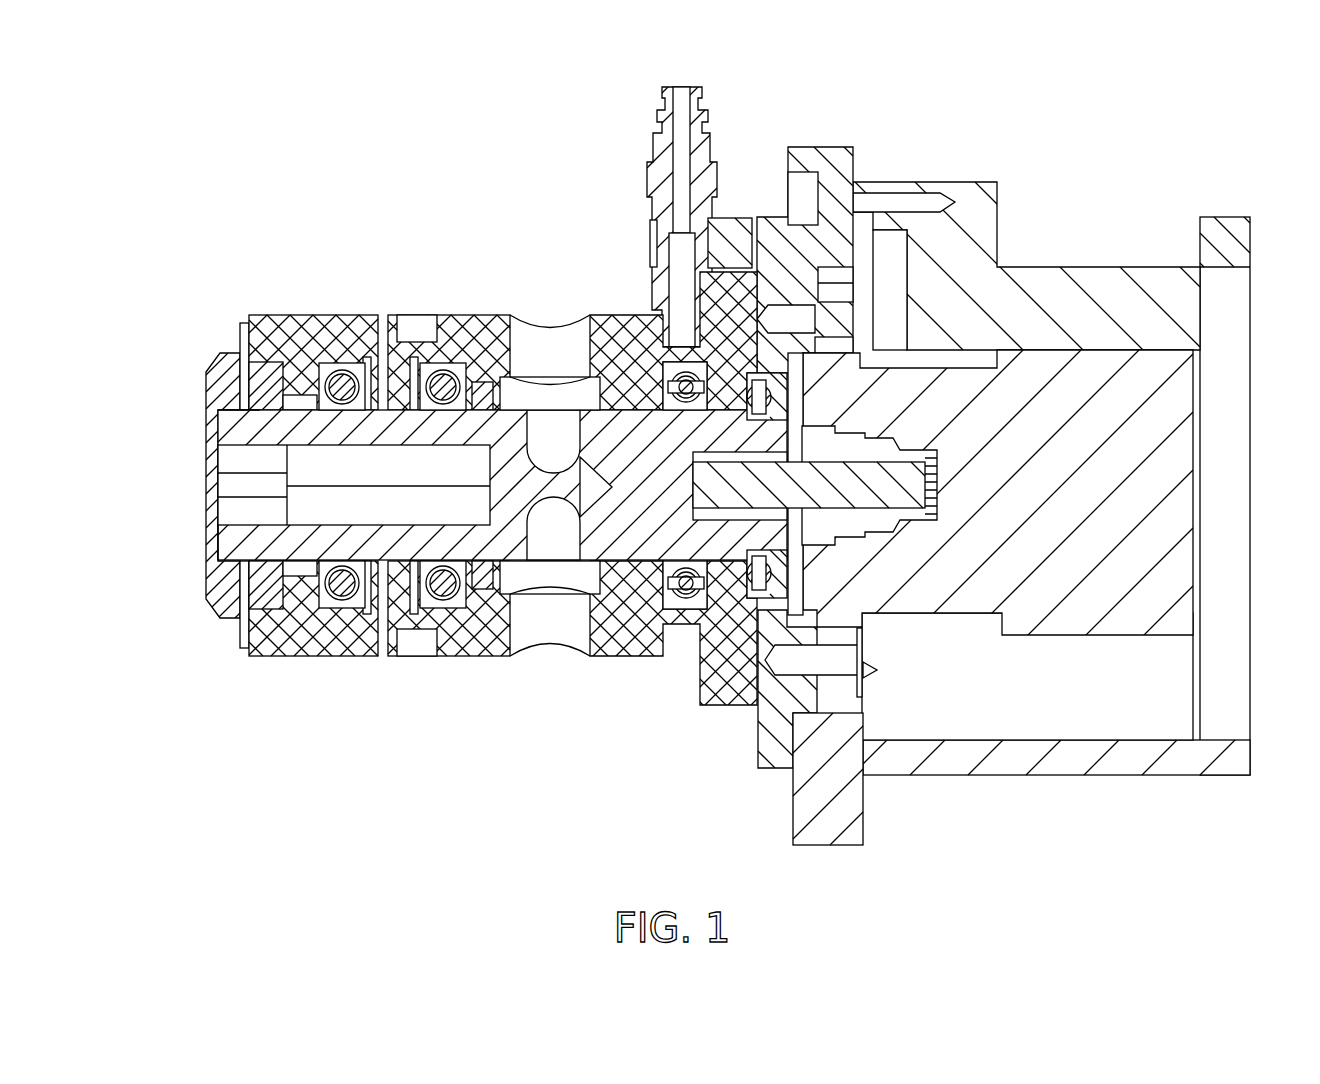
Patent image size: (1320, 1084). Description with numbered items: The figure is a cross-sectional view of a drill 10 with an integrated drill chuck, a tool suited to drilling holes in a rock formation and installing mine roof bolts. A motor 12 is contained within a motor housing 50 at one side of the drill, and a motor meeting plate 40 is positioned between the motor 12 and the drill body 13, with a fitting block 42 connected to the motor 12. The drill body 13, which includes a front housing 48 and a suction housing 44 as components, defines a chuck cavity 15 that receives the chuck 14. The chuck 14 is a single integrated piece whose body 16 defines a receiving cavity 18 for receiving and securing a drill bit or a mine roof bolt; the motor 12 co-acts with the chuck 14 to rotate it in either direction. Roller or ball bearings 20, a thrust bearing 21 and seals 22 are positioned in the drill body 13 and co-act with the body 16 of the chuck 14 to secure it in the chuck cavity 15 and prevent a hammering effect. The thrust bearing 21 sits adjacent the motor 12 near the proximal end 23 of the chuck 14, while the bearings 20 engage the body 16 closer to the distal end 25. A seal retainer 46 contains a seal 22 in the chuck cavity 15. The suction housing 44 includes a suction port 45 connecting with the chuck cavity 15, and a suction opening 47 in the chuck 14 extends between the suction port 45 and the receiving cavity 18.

The drill 10 is at (1156, 126).
The motor 12 is at (1152, 488).
The drill body 13 is at (300, 630).
The chuck 14 is at (222, 556).
The chuck cavity 15 is at (395, 460).
The body 16 is at (242, 425).
The receiving cavity 18 is at (298, 493).
The roller or ball bearing 20 is at (350, 620).
The thrust bearing 21 is at (760, 610).
The seal 22 is at (455, 340).
The proximal end 23 is at (792, 440).
The distal end 25 is at (222, 540).
The motor meeting plate 40 is at (770, 230).
The fitting block 42 is at (975, 182).
The suction housing 44 is at (510, 320).
The suction port 45 is at (565, 320).
The seal retainer 46 is at (242, 330).
The suction opening 47 is at (545, 625).
The front housing 48 is at (300, 315).
The motor housing 50 is at (855, 812).